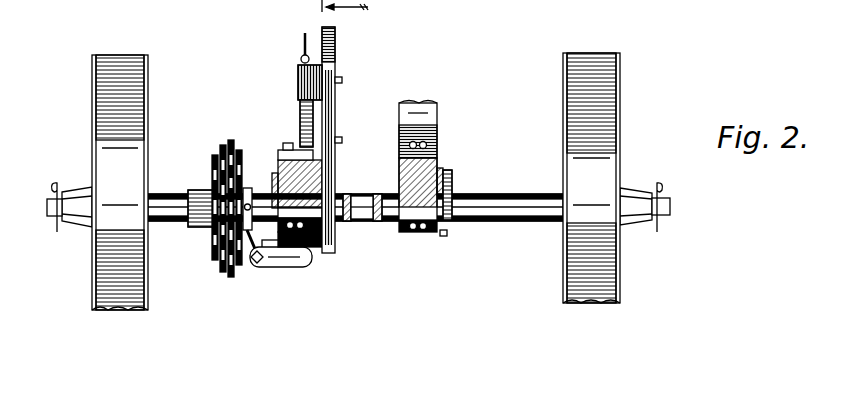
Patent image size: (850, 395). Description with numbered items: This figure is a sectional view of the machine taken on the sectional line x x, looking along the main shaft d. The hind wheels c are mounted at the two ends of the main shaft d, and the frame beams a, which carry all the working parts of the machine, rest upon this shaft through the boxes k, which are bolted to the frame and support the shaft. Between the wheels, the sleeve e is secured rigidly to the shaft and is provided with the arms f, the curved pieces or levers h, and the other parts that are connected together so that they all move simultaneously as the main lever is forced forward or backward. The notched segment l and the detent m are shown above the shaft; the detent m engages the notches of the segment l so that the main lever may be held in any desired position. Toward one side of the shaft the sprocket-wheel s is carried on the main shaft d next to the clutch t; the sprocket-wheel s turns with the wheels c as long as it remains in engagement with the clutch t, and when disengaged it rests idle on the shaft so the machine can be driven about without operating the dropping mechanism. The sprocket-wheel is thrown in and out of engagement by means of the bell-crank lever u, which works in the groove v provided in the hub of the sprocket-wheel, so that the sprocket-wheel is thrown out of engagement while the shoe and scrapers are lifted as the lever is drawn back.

The frame beams a is at (286, 172).
The hind wheels c is at (212, 8).
The main shaft d is at (507, 199).
The sleeve e is at (370, 222).
The arms f is at (346, 195).
The curved pieces h is at (268, 250).
The boxes k is at (305, 260).
The segment l is at (302, 135).
The detent m is at (298, 94).
The sprocket-wheel s is at (223, 150).
The clutch t is at (198, 190).
The bell-crank lever u is at (256, 260).
The groove v is at (249, 194).
The sectional line x is at (340, 13).